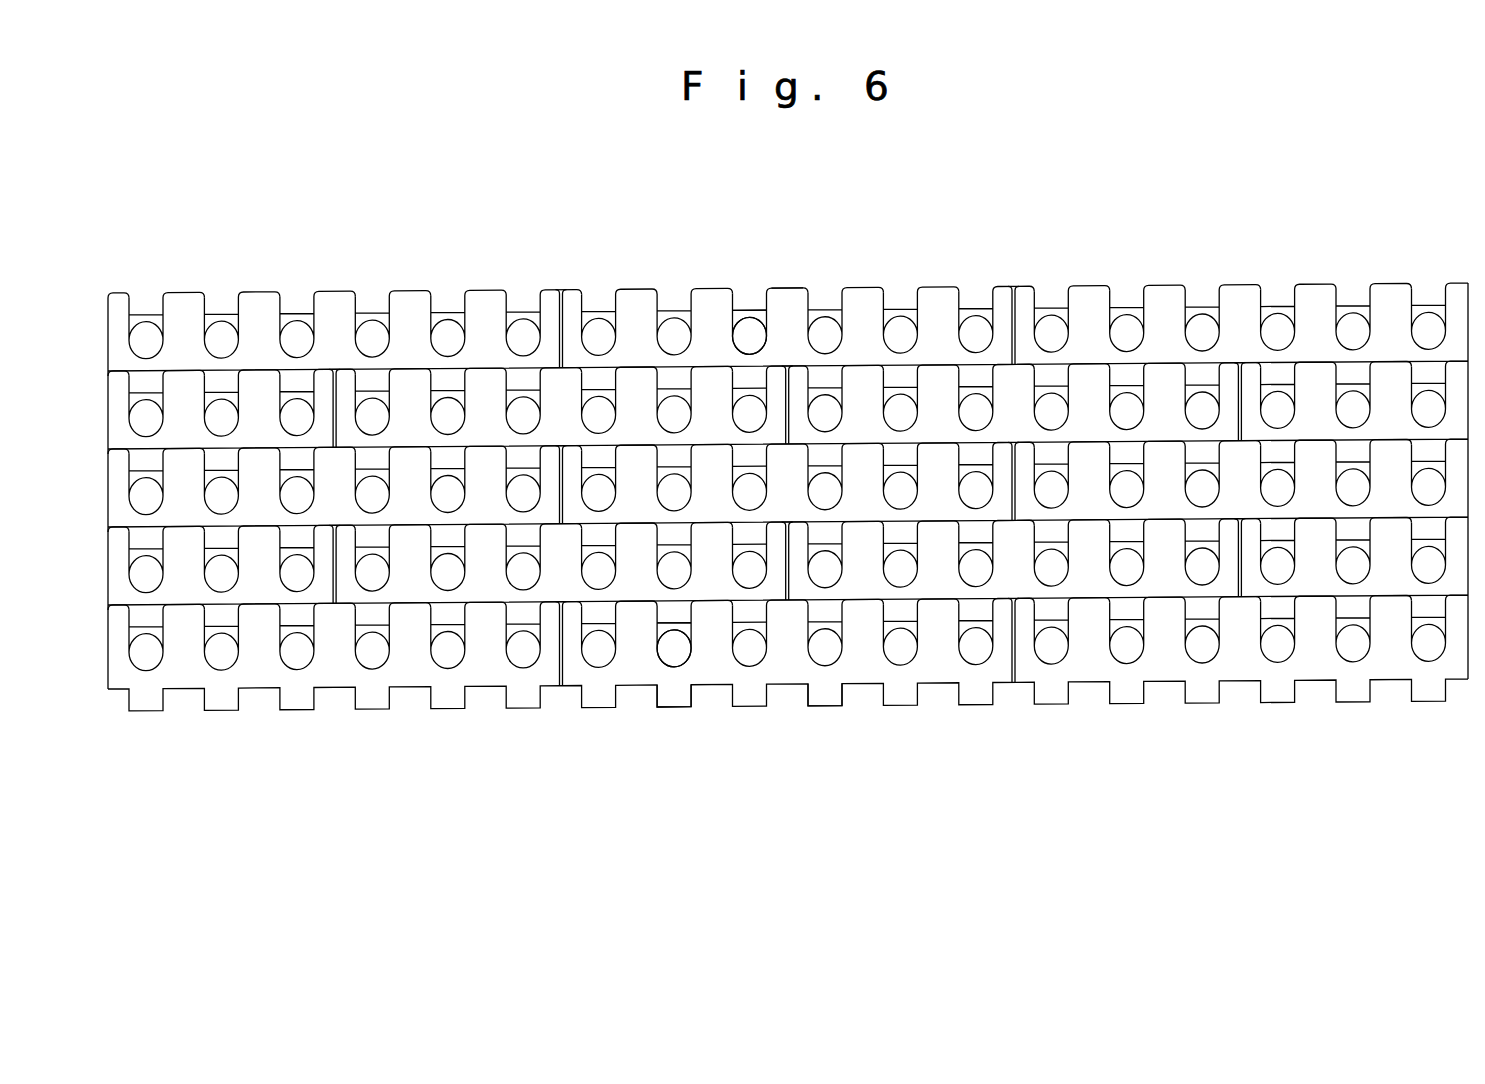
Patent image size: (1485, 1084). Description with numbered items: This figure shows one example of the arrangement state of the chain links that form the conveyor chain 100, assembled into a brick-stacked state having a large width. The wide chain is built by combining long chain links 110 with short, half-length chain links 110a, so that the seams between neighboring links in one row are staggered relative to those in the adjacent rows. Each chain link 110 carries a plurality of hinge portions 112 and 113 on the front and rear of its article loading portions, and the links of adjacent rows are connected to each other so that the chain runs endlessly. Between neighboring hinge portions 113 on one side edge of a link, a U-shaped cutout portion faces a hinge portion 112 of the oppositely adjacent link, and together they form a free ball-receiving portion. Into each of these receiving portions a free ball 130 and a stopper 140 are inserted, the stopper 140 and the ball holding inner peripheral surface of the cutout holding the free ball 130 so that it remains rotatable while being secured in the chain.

The conveyor chain 100 is at (603, 272).
The chain link 110 is at (185, 665).
The short chain link 110a is at (258, 578).
The hinge portion 112 is at (677, 615).
The hinge portion 113 is at (788, 295).
The free ball 130 is at (738, 337).
The stopper 140 is at (748, 313).